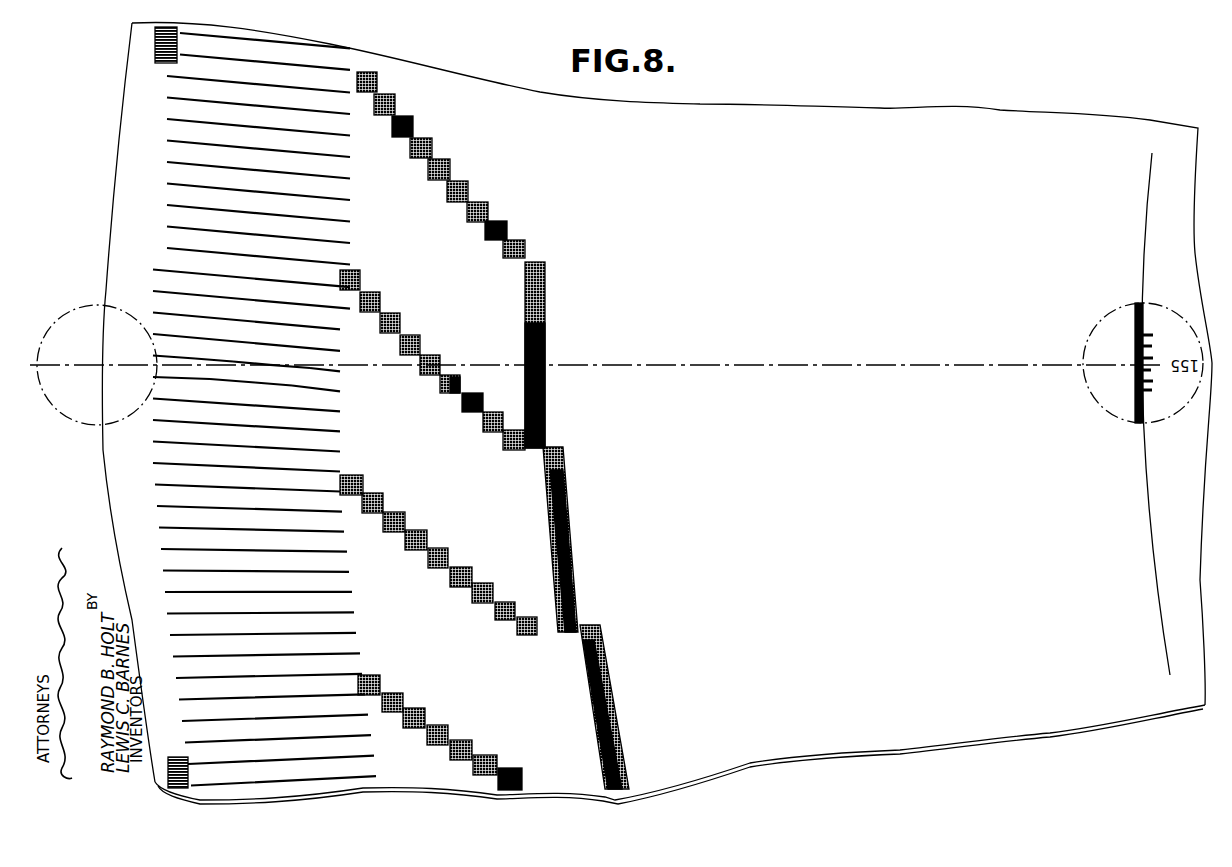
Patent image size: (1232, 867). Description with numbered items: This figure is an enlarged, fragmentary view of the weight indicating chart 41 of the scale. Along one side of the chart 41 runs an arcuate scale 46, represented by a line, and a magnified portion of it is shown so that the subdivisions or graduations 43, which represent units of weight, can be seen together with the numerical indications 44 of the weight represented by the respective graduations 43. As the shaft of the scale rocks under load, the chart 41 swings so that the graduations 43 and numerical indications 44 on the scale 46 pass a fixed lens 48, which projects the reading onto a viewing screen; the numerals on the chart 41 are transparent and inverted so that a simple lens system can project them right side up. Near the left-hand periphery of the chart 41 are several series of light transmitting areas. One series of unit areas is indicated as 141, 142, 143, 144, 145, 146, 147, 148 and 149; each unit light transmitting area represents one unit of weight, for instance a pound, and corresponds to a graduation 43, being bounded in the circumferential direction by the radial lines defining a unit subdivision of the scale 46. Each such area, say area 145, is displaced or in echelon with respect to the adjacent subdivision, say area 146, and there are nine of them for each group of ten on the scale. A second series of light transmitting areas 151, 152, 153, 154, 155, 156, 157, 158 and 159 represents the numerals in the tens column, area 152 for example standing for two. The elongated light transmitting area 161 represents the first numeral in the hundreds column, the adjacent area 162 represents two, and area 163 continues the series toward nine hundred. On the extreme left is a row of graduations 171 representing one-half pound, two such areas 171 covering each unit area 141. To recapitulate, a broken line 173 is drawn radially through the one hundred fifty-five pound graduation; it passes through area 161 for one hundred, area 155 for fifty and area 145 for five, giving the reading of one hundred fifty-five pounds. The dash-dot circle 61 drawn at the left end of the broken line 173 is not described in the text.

The chart 41 is at (1025, 727).
The graduations 43 is at (1150, 343).
The numerical indications 44 is at (1183, 350).
The scale 46 is at (1155, 606).
The fixed lens 48 is at (1098, 399).
The detail circle 61 is at (86, 311).
The unit light transmitting area 141 is at (170, 357).
The unit light transmitting area 142 is at (178, 362).
The unit light transmitting area 143 is at (205, 360).
The unit light transmitting area 144 is at (222, 365).
The unit light transmitting area 145 is at (252, 364).
The unit light transmitting area 146 is at (262, 369).
The unit light transmitting area 147 is at (292, 367).
The unit light transmitting area 148 is at (300, 367).
The unit light transmitting area 149 is at (328, 371).
The tens light transmitting area 151 is at (361, 279).
The tens light transmitting area 152 is at (381, 303).
The tens light transmitting area 153 is at (401, 323).
The tens light transmitting area 154 is at (421, 342).
The tens light transmitting area 155 is at (441, 360).
The tens light transmitting area 156 is at (461, 380).
The tens light transmitting area 157 is at (483, 399).
The tens light transmitting area 158 is at (483, 426).
The tens light transmitting area 159 is at (503, 444).
The elongated light transmitting area 161 is at (545, 339).
The elongated light transmitting area 162 is at (575, 529).
The elongated light transmitting area 163 is at (614, 700).
The row of graduations 171 is at (172, 757).
The broken line 173 is at (597, 382).